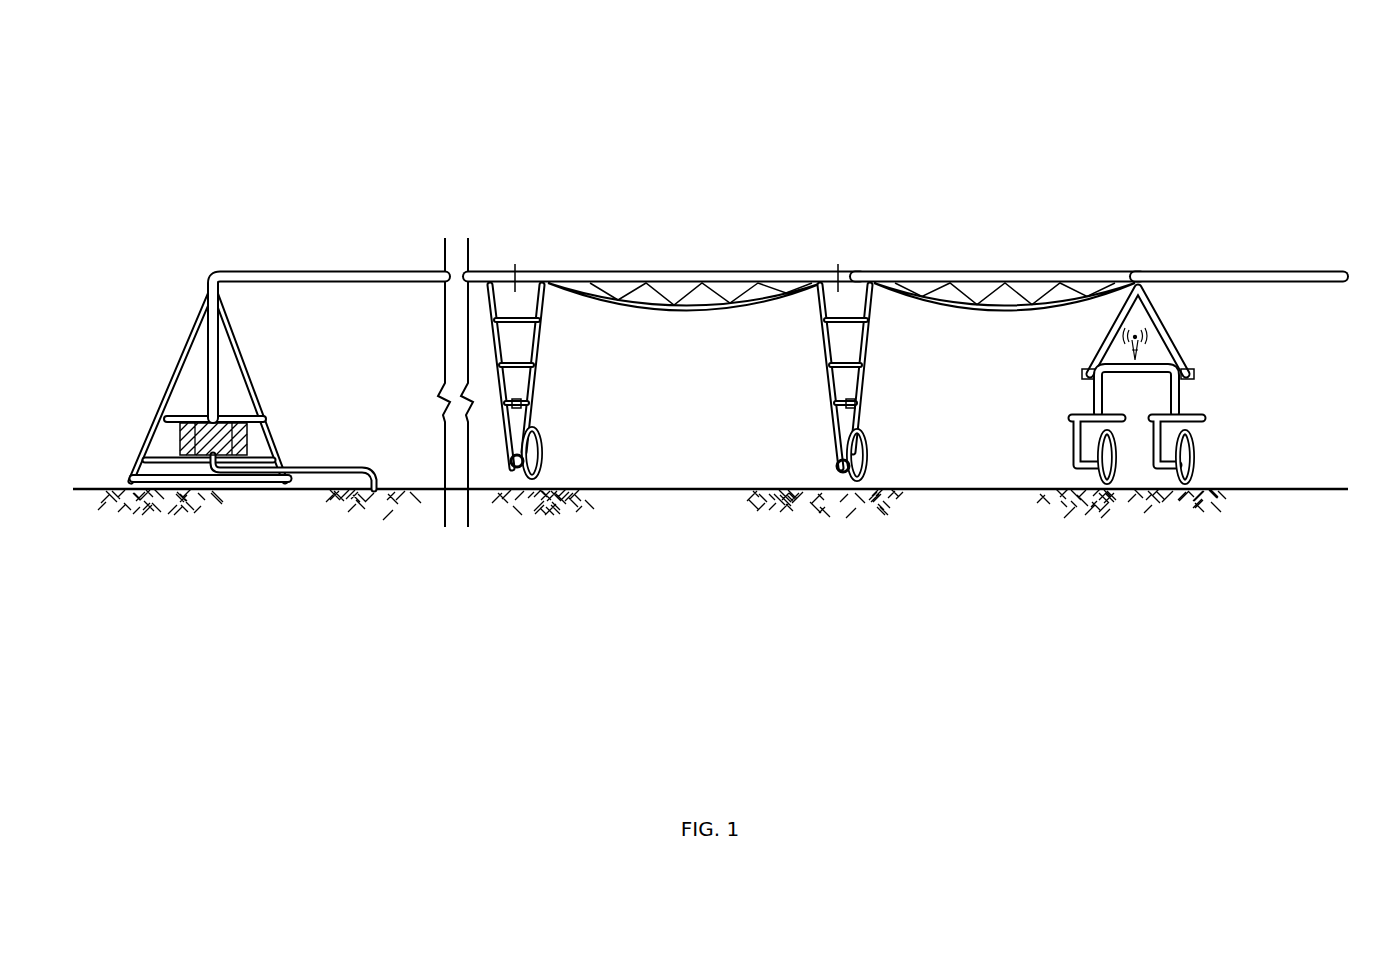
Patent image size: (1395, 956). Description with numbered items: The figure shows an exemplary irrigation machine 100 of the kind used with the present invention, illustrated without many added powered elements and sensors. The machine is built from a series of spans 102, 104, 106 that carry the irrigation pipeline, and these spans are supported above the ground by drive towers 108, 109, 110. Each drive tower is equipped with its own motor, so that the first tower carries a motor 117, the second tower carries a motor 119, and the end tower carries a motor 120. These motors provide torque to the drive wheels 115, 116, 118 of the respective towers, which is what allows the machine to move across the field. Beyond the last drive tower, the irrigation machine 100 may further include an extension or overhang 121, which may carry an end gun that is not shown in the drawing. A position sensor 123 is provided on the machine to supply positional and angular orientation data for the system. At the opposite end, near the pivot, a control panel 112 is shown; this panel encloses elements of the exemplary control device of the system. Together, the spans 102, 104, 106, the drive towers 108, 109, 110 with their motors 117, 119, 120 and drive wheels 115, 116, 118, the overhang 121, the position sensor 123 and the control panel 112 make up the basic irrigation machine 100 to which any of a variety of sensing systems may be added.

The irrigation machine 100 is at (775, 103).
The span 102 is at (272, 270).
The span 104 is at (643, 270).
The span 106 is at (987, 272).
The drive tower 108 is at (540, 352).
The drive tower 109 is at (872, 320).
The drive tower 110 is at (1182, 360).
The control panel 112 is at (197, 417).
The drive wheel 115 is at (540, 460).
The drive wheel 116 is at (865, 460).
The motor 117 is at (523, 403).
The drive wheel 118 is at (1120, 463).
The motor 119 is at (860, 403).
The motor 120 is at (1153, 423).
The extension/overhang 121 is at (1322, 272).
The position sensor 123 is at (1148, 332).